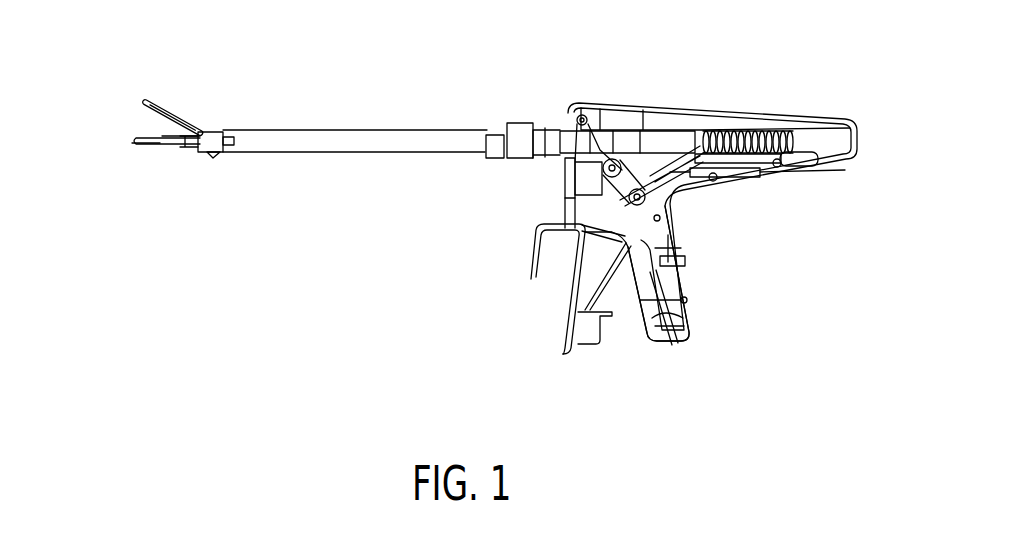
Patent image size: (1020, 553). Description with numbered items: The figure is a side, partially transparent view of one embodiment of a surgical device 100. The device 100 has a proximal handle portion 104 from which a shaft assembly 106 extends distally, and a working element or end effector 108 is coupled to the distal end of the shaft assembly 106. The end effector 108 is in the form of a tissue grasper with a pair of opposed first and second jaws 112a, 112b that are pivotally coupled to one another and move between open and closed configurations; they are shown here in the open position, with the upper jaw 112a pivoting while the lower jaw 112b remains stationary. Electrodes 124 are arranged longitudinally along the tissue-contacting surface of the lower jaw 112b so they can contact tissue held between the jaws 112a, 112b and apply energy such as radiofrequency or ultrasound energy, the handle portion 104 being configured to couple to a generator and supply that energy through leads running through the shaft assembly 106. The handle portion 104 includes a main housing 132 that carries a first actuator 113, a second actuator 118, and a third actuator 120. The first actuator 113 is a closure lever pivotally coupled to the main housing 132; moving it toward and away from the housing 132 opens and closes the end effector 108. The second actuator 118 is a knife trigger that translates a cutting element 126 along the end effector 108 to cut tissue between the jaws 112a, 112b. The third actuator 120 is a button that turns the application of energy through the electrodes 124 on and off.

The surgical device 100 is at (223, 130).
The proximal handle portion 104 is at (703, 278).
The shaft assembly 106 is at (373, 123).
The working element 108 is at (173, 101).
The first jaw 112a is at (146, 100).
The second jaw 112b is at (137, 148).
The first actuator 113 is at (566, 305).
The second actuator 118 is at (566, 208).
The third actuator 120 is at (566, 178).
The electrodes 124 is at (134, 143).
The cutting element 126 is at (162, 138).
The main housing 132 is at (672, 341).